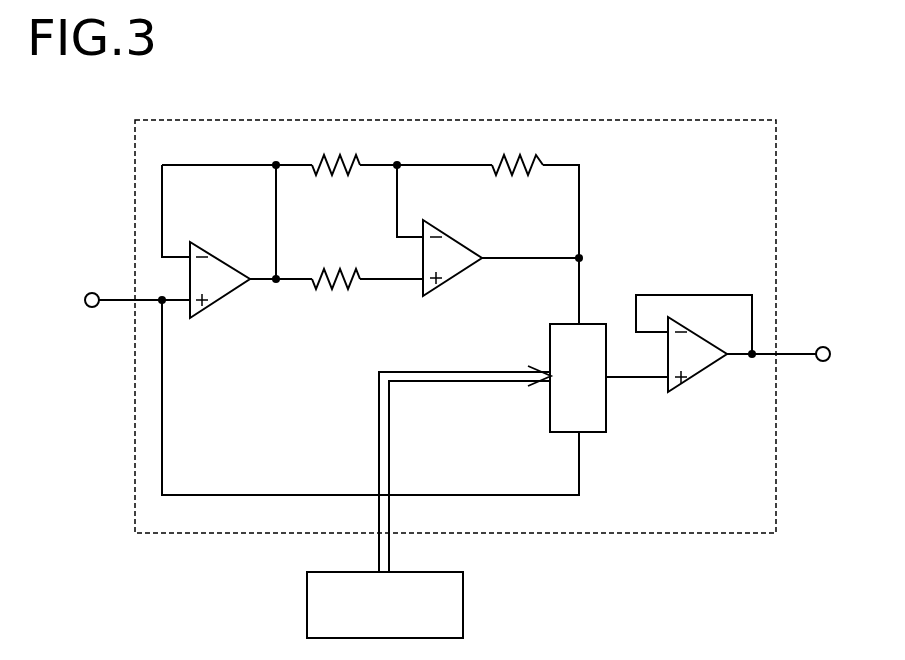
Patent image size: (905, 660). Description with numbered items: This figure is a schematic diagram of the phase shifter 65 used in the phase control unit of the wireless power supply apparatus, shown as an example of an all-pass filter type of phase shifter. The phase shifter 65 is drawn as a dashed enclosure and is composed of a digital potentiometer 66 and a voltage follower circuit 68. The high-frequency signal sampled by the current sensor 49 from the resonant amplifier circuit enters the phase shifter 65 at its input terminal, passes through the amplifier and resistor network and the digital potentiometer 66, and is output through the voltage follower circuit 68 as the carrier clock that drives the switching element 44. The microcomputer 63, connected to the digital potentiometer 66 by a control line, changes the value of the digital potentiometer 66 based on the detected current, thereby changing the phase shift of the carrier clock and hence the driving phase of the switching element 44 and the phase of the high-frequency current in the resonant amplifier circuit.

The switching element 44 is at (823, 347).
The current sensor 49 is at (92, 292).
The microcomputer 63 is at (307, 606).
The phase shifter 65 is at (424, 120).
The digital potentiometer 66 is at (550, 410).
The voltage follower circuit 68 is at (694, 378).